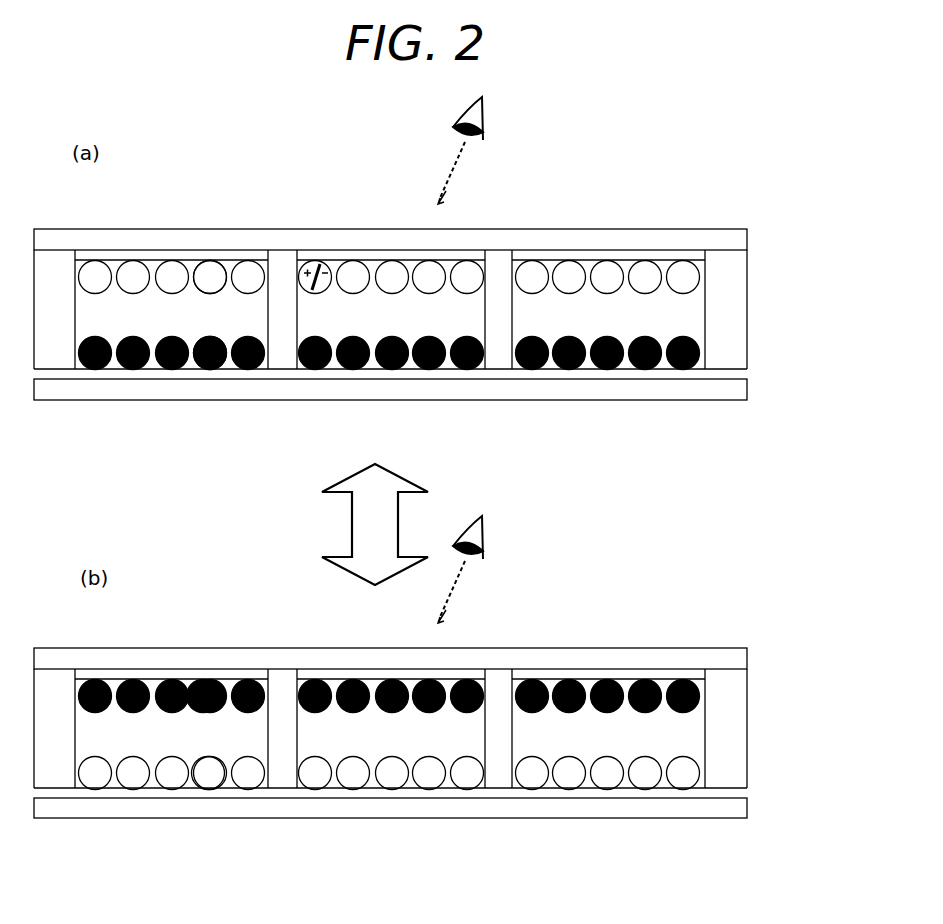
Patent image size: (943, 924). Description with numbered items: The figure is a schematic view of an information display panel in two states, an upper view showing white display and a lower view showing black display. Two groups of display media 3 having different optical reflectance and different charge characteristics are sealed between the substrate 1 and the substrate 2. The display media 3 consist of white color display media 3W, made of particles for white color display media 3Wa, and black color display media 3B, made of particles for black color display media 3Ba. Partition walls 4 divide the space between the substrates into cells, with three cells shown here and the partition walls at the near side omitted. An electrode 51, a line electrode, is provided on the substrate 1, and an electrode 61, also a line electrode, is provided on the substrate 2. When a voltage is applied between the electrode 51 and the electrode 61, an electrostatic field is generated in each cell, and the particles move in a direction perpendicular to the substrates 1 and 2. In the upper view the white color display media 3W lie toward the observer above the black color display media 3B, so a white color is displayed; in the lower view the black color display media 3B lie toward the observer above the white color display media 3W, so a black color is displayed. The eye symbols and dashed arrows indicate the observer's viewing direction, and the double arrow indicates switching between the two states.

The substrate 1 is at (665, 393).
The substrate 2 is at (668, 238).
The display media 3 is at (808, 260).
The white color display media 3W is at (760, 262).
The black color display media 3B is at (760, 337).
The particles for white color display media 3Wa is at (210, 272).
The particles for black color display media 3Ba is at (207, 370).
The partition wall 4 is at (53, 352).
The electrode 51 is at (587, 373).
The electrode 61 is at (588, 252).